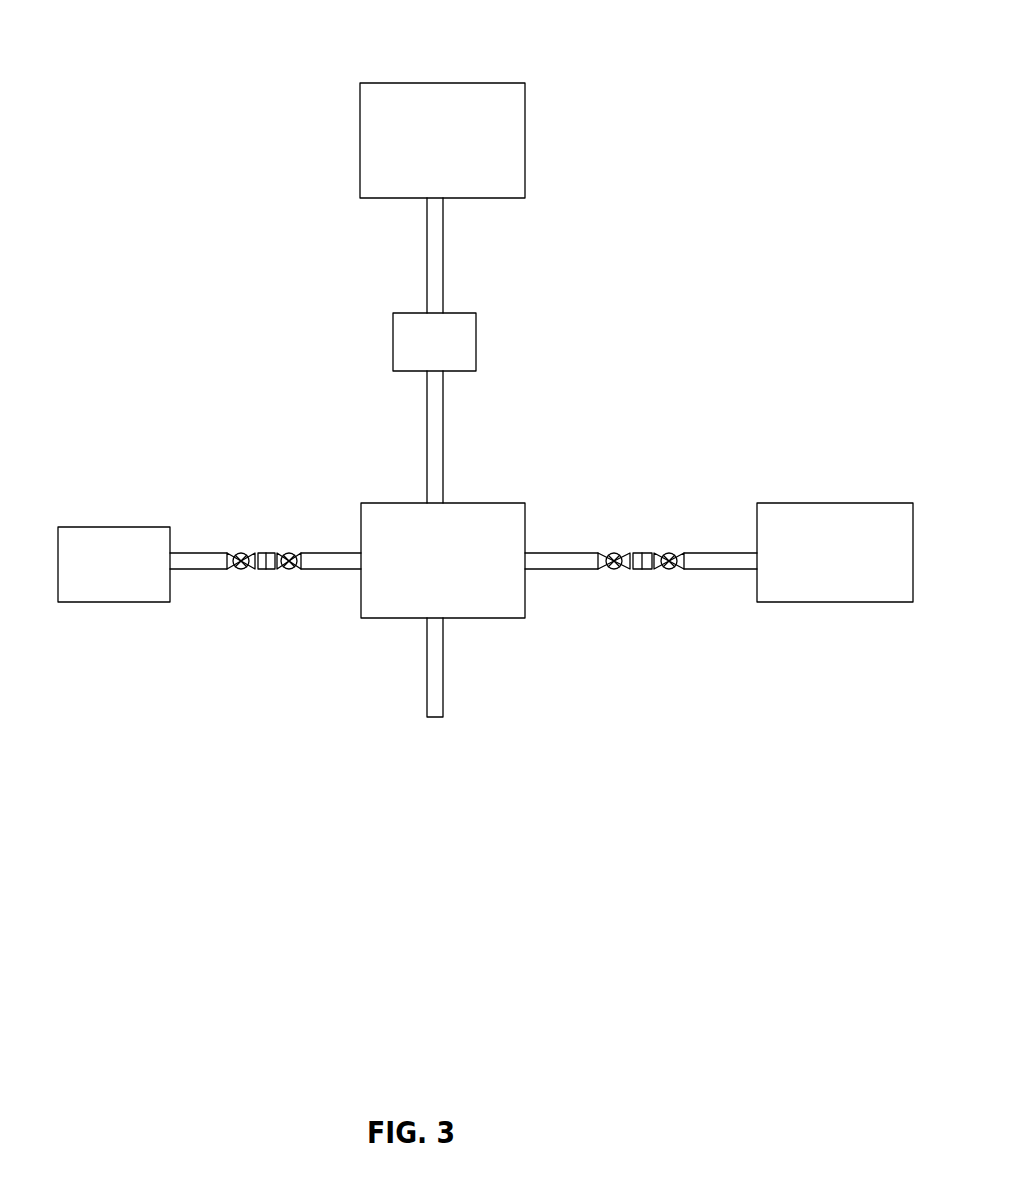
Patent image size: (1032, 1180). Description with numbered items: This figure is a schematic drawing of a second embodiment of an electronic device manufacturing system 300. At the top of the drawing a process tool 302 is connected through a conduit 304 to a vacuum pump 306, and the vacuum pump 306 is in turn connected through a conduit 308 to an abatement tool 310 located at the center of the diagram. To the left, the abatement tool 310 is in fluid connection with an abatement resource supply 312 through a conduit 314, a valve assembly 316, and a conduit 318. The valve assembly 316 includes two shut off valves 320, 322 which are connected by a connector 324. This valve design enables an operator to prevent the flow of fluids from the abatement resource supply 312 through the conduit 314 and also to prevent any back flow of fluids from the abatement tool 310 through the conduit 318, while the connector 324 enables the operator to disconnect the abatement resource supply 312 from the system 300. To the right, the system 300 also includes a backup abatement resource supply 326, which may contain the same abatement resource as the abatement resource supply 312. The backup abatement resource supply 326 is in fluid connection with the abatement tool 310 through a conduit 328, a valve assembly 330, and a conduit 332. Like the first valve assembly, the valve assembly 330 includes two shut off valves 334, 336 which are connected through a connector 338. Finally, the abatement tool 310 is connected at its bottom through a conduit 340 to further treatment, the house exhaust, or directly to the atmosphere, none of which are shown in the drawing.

The electronic device manufacturing system 300 is at (598, 68).
The process tool 302 is at (525, 133).
The conduit 304 is at (443, 247).
The vacuum pump 306 is at (476, 345).
The conduit 308 is at (443, 426).
The abatement tool 310 is at (491, 503).
The abatement resource supply 312 is at (143, 527).
The conduit 314 is at (215, 553).
The valve assembly 316 is at (259, 615).
The conduit 318 is at (320, 553).
The shut off valve 320 is at (243, 570).
The shut off valve 322 is at (262, 622).
The connector 324 is at (267, 570).
The backup abatement resource supply 326 is at (830, 503).
The conduit 328 is at (720, 553).
The valve assembly 330 is at (635, 547).
The conduit 332 is at (567, 553).
The shut off valve 334 is at (614, 570).
The shut off valve 336 is at (669, 570).
The connector 338 is at (642, 570).
The conduit 340 is at (443, 665).